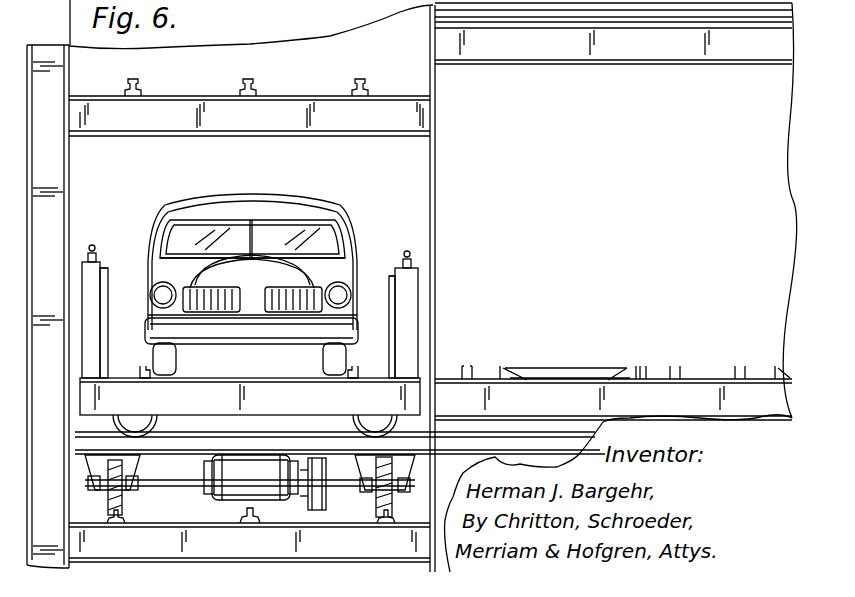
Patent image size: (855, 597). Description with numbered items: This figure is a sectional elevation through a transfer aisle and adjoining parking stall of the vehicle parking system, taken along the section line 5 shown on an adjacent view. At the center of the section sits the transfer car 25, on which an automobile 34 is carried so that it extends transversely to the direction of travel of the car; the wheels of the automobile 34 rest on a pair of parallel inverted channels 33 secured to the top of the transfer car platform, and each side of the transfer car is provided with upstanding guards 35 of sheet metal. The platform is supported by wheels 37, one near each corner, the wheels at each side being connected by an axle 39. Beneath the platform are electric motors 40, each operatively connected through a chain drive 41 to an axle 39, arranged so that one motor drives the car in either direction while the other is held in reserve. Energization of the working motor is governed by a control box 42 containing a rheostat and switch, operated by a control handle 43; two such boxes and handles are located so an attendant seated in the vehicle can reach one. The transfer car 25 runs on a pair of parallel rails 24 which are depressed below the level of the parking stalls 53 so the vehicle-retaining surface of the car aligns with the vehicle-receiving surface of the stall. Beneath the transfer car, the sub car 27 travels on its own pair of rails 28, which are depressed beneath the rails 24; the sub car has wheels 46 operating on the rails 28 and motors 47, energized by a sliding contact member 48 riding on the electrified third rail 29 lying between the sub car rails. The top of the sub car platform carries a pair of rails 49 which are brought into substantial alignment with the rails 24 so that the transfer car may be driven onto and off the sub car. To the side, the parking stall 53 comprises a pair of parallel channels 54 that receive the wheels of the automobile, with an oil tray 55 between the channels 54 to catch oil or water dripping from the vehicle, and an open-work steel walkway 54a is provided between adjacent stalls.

The section line 5 is at (68, 31).
The parallel rails 24 is at (762, 15).
The transfer car 25 is at (421, 286).
The sub car 27 is at (241, 288).
The rails 28 is at (138, 84).
The electrified third rail 29 is at (257, 83).
The inverted channels 33 is at (318, 372).
The automobile 34 is at (302, 200).
The upstanding guards 35 is at (108, 290).
The wheels 37 is at (130, 420).
The axle 39 is at (249, 116).
The electric motors 40 is at (262, 430).
The chain drive 41 is at (190, 425).
The control box 42 is at (98, 345).
The control handle 43 is at (97, 247).
The wheels 46 is at (123, 503).
The motors 47 is at (212, 479).
The sliding contact member 48 is at (312, 512).
The rails 49 is at (415, 440).
The parking stall 53 is at (630, 370).
The parallel channels 54 is at (478, 376).
The walkway 54a is at (712, 376).
The oil tray 55 is at (565, 368).